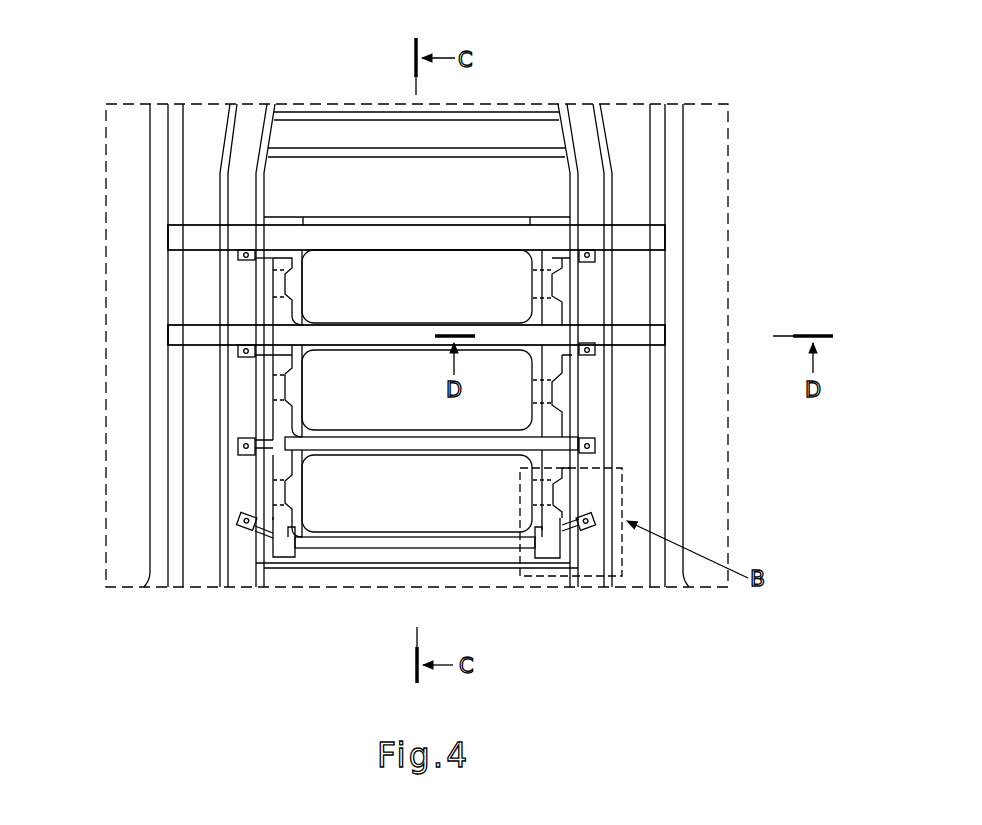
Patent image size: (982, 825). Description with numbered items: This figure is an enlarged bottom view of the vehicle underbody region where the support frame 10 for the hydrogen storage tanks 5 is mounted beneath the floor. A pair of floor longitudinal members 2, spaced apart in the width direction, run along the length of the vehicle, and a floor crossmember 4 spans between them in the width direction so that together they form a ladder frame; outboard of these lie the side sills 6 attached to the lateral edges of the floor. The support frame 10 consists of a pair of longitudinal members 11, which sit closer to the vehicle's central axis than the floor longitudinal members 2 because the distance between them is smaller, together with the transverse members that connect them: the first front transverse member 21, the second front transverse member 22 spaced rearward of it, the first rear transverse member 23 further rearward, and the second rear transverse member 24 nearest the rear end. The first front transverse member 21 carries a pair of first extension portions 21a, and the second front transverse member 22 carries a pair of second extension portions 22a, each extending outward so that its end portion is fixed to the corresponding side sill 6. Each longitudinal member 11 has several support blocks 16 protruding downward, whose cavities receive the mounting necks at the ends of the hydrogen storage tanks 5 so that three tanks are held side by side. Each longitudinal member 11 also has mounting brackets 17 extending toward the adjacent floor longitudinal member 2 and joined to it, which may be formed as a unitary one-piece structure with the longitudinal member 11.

The floor longitudinal member 2 is at (243, 482).
The floor crossmember 4 is at (467, 222).
The hydrogen storage tank 5 is at (335, 295).
The side sill 6 is at (147, 355).
The support frame 10 is at (311, 551).
The longitudinal member 11 is at (282, 550).
The support block 16 is at (273, 390).
The mounting bracket 17 is at (597, 256).
The first front transverse member 21 is at (428, 243).
The first extension portion 21a is at (182, 236).
The second front transverse member 22 is at (385, 333).
The second extension portion 22a is at (182, 339).
The first rear transverse member 23 is at (502, 445).
The second rear transverse member 24 is at (465, 550).